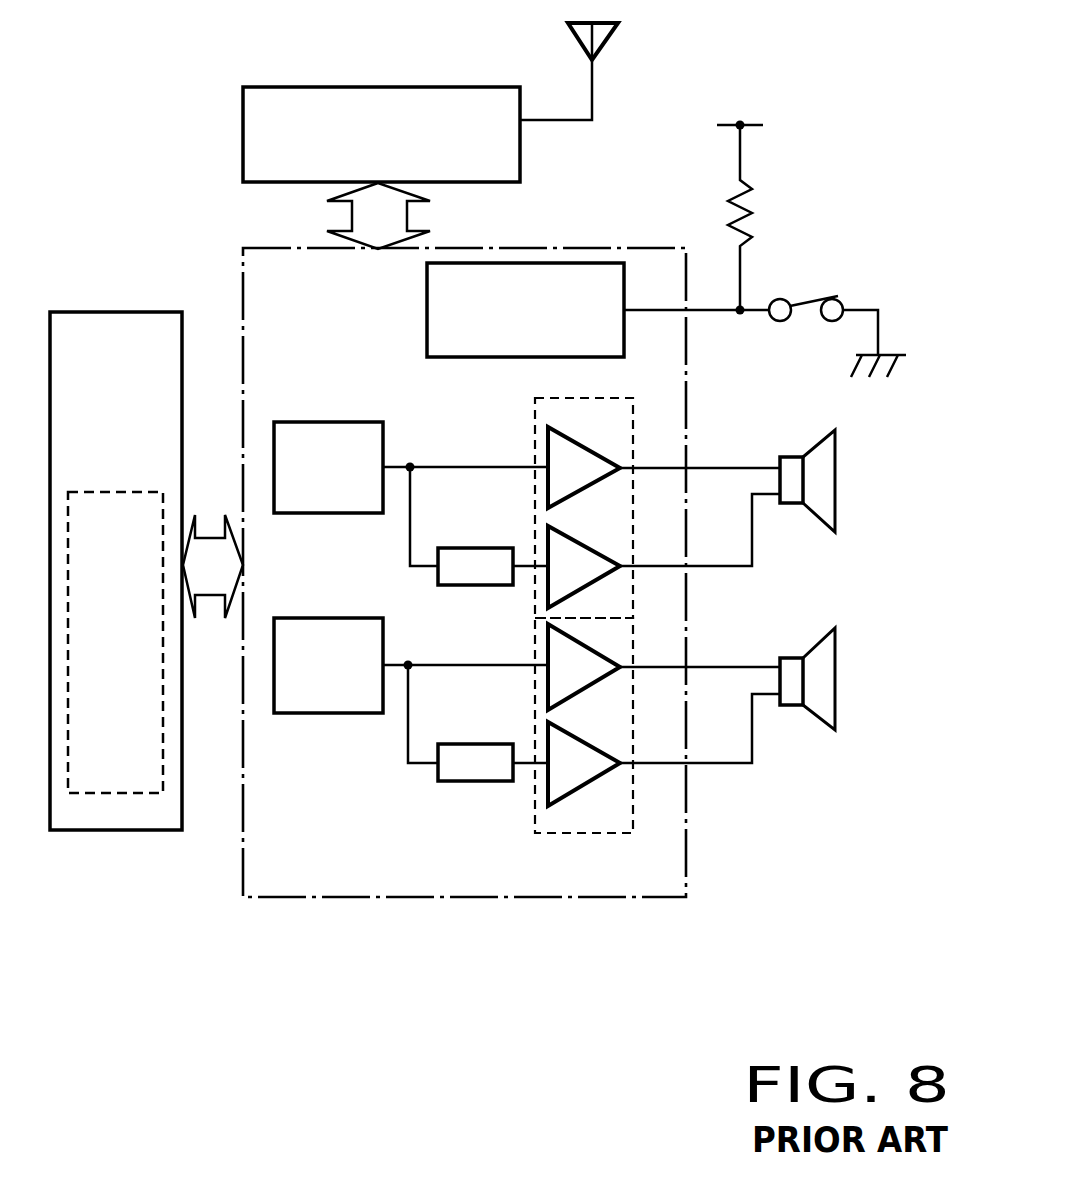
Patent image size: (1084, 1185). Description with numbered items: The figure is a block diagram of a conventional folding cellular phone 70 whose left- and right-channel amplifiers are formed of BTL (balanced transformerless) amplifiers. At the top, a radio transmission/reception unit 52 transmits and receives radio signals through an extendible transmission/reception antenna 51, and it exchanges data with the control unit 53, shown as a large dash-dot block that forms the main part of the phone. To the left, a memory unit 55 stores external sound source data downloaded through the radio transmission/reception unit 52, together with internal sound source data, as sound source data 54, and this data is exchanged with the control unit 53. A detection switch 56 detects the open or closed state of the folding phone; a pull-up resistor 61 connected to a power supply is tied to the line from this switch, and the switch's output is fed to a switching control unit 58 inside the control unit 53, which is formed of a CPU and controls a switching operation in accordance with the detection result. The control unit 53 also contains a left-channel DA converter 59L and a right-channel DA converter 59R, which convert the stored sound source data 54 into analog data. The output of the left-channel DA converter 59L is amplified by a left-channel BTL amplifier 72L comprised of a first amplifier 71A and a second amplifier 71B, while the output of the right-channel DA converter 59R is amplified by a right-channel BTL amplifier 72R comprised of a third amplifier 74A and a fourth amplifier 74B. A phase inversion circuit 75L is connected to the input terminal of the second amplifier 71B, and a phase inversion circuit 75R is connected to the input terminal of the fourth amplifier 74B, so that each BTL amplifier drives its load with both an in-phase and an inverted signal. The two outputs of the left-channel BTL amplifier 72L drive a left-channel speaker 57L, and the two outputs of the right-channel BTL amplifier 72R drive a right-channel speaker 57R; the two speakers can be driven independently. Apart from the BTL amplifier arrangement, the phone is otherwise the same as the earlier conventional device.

The transmission/reception antenna 51 is at (606, 42).
The radio transmission/reception unit 52 is at (338, 86).
The control unit 53 is at (283, 900).
The sound source data 54 is at (107, 492).
The memory unit 55 is at (85, 312).
The detection switch 56 is at (811, 298).
The left-channel speaker 57L is at (798, 456).
The right-channel speaker 57R is at (796, 657).
The switching control unit 58 is at (427, 293).
The left-channel DA converter 59L is at (299, 421).
The right-channel DA converter 59R is at (298, 618).
The pull-up resistor 61 is at (752, 197).
The folding cellular phone 70 is at (813, 86).
The first amplifier 71A is at (608, 452).
The second amplifier 71B is at (608, 552).
The left-channel BTL amplifier 72L is at (625, 504).
The right-channel BTL amplifier 72R is at (655, 756).
The third amplifier 74A is at (590, 688).
The fourth amplifier 74B is at (543, 857).
The phase inversion circuit 75L is at (458, 587).
The phase inversion circuit 75R is at (458, 783).